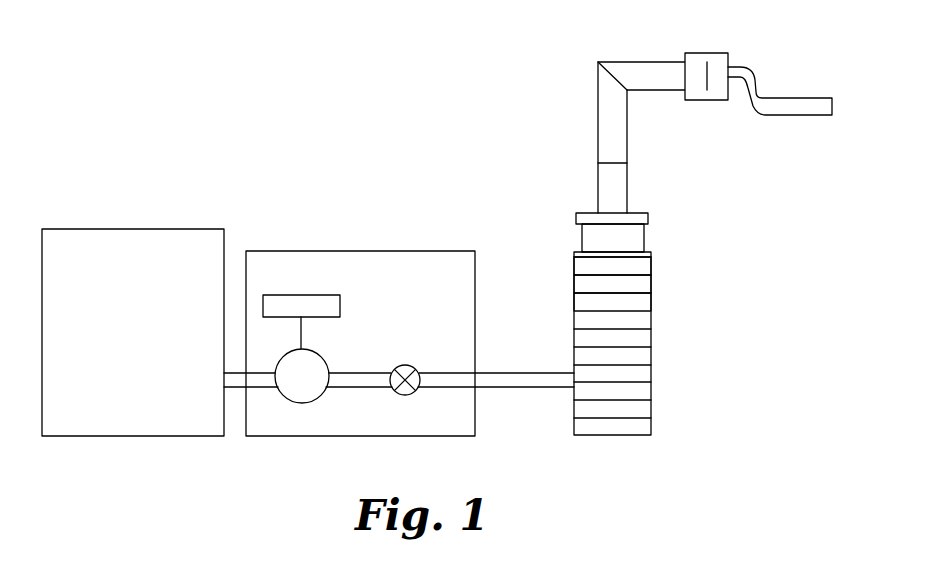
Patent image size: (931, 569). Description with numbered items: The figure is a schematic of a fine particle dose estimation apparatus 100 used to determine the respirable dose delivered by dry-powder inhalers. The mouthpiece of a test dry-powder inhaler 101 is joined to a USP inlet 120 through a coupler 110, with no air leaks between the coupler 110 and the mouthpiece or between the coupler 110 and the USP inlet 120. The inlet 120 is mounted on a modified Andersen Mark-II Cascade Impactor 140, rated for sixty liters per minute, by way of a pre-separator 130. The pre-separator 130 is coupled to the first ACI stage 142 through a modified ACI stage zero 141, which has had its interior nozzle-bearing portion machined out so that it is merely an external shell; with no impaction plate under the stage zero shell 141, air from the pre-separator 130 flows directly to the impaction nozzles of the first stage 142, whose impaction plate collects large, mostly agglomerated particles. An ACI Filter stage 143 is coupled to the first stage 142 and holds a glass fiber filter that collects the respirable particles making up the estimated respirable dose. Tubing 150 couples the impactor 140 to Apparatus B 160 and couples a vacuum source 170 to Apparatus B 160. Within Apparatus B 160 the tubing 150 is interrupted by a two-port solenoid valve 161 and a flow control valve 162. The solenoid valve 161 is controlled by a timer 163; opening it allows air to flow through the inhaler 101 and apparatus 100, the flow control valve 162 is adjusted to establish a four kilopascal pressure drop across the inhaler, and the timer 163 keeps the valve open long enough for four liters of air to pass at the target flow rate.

The fine particle dose estimation apparatus 100 is at (162, 77).
The test dry-powder inhaler 101 is at (795, 97).
The coupler 110 is at (704, 52).
The USP inlet 120 is at (598, 105).
The pre-separator 130 is at (582, 237).
The modified Andersen Mark-II Cascade Impactor 140 is at (676, 319).
The modified ACI Stage 0 141 is at (643, 268).
The ACI Stage 1 142 is at (644, 283).
The ACI Filter stage 143 is at (644, 300).
The tubing 150 is at (232, 382).
The Apparatus B 160 is at (379, 250).
The 2-port solenoid valve 161 is at (300, 392).
The flow control valve 162 is at (403, 394).
The timer 163 is at (288, 302).
The vacuum source 170 is at (125, 242).